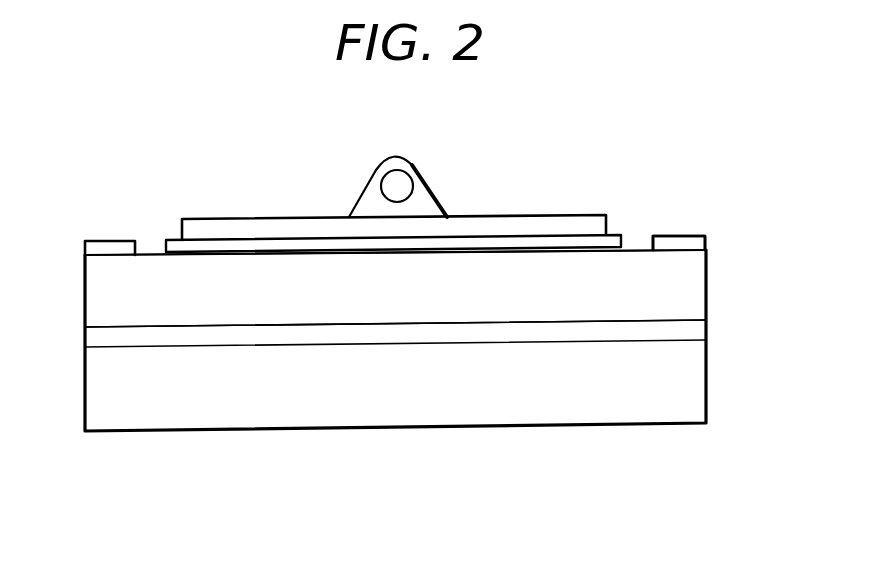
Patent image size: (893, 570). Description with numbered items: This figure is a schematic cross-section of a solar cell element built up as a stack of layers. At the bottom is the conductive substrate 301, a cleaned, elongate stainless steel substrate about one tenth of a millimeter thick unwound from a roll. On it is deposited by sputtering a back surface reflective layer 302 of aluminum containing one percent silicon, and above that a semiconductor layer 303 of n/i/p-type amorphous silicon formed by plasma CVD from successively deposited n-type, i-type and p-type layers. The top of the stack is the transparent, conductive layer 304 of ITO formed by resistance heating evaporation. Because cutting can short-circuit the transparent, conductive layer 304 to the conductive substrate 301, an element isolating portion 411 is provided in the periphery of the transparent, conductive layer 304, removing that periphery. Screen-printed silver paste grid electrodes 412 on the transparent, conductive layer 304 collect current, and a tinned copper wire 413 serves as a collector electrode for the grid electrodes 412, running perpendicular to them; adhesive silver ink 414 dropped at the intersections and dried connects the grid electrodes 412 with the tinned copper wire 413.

The conductive substrate 301 is at (673, 417).
The back surface reflective layer 302 is at (700, 331).
The semiconductor layer 303 is at (698, 290).
The transparent, conductive layer 304 is at (693, 242).
The element isolating portion 411 is at (149, 252).
The grid electrodes 412 is at (528, 222).
The tinned copper wire 413 is at (404, 177).
The adhesive silver ink 414 is at (373, 172).